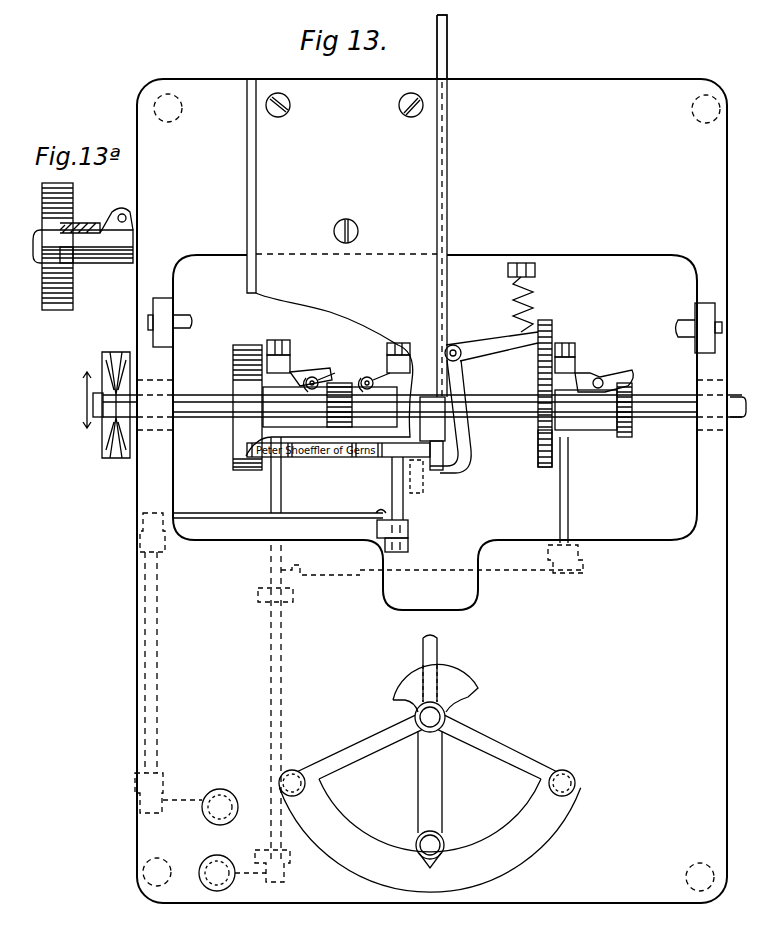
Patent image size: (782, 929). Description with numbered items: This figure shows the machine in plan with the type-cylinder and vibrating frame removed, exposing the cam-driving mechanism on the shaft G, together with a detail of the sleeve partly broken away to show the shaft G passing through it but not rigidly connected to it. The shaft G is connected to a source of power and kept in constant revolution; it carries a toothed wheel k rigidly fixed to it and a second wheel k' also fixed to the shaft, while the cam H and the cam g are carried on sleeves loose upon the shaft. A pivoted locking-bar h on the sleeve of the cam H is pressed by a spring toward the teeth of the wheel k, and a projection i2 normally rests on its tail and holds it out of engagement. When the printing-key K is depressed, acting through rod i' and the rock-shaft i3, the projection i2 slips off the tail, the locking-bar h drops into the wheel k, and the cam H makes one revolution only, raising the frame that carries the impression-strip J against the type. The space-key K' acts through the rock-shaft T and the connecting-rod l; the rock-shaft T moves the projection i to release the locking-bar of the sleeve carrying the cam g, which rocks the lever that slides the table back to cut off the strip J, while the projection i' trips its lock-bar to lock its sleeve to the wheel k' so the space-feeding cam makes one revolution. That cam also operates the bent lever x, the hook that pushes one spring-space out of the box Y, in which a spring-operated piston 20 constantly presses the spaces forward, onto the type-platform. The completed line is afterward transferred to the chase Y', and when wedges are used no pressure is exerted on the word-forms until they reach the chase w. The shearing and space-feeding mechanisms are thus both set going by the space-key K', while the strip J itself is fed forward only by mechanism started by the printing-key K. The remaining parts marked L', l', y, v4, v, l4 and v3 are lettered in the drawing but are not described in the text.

In FIG. 13, the piston 20 is at (453, 47).
In FIG. 13, the box Y is at (454, 206).
In FIG. 13, the chase Y' is at (342, 186).
In FIG. 13, the bearing pin L' is at (435, 318).
In FIG. 13, the cam g is at (233, 355).
In FIG. 13, the projection i is at (285, 356).
In FIG. 13, the lever l' is at (311, 367).
In FIG. 13, the toothed wheel k is at (339, 386).
In FIG. 13, the locking-bar h is at (362, 372).
In FIG. 13, the projection i2 is at (398, 355).
In FIG. 13, the chase w is at (462, 343).
In FIG. 13, the spring y is at (536, 298).
In FIG. 13, the rack v4 is at (552, 325).
In FIG. 13, the projection i' is at (577, 357).
In FIG. 13, the wheel k' is at (637, 405).
In FIG. 13, the bent lever x is at (468, 441).
In FIG. 13, the rack segment v is at (538, 440).
In FIG. 13, the shaft G is at (664, 420).
In FIG. 13A, the shaft G is at (83, 233).
In FIG. 13, the cam H is at (424, 493).
In FIG. 13, the rod l4 is at (392, 485).
In FIG. 13, the rod v3 is at (568, 497).
In FIG. 13, the connecting-rod l is at (279, 508).
In FIG. 13, the rock-shaft i3 is at (157, 665).
In FIG. 13, the rock-shaft T is at (281, 680).
In FIG. 13, the printing-key K is at (230, 807).
In FIG. 13, the space-key K' is at (244, 863).
In FIG. 13A, the impression-strip J is at (53, 246).